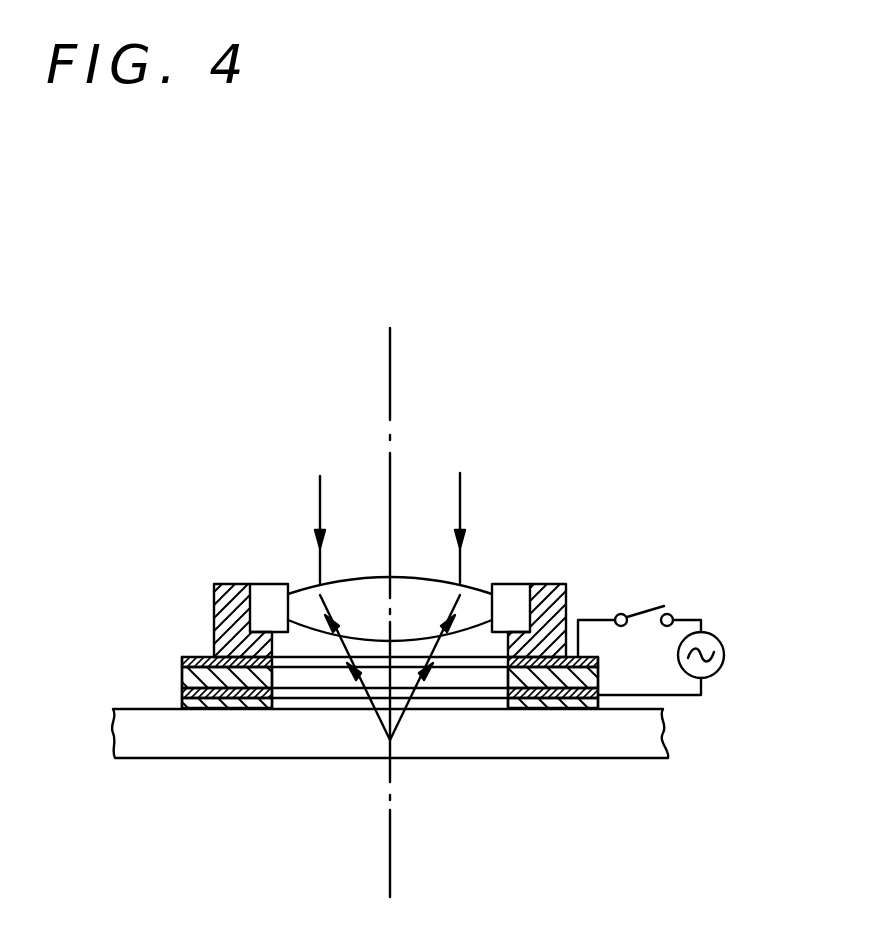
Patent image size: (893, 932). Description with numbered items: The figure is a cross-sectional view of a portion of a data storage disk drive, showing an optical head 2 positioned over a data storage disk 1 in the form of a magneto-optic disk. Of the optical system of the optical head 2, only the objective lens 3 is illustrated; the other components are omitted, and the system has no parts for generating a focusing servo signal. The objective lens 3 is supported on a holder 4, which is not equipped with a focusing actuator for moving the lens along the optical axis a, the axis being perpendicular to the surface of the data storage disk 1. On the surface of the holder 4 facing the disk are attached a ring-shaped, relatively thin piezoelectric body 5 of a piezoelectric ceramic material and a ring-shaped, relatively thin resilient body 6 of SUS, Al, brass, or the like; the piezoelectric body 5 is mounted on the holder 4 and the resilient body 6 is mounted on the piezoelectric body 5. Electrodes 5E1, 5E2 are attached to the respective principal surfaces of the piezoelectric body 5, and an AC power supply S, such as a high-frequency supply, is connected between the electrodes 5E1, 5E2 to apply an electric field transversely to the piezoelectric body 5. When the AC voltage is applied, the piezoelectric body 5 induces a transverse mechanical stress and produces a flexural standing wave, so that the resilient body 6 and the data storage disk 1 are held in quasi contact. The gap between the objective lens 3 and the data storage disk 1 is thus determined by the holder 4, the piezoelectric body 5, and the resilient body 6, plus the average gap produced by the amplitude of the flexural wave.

The data storage disk 1 is at (648, 745).
The optical head 2 is at (487, 579).
The objective lens 3 is at (425, 583).
The holder 4 is at (565, 597).
The piezoelectric body 5 is at (230, 676).
The electrode 5E1 is at (196, 657).
The electrode 5E2 is at (180, 690).
The resilient body 6 is at (530, 703).
The optical axis a is at (393, 357).
The AC power supply S is at (716, 633).